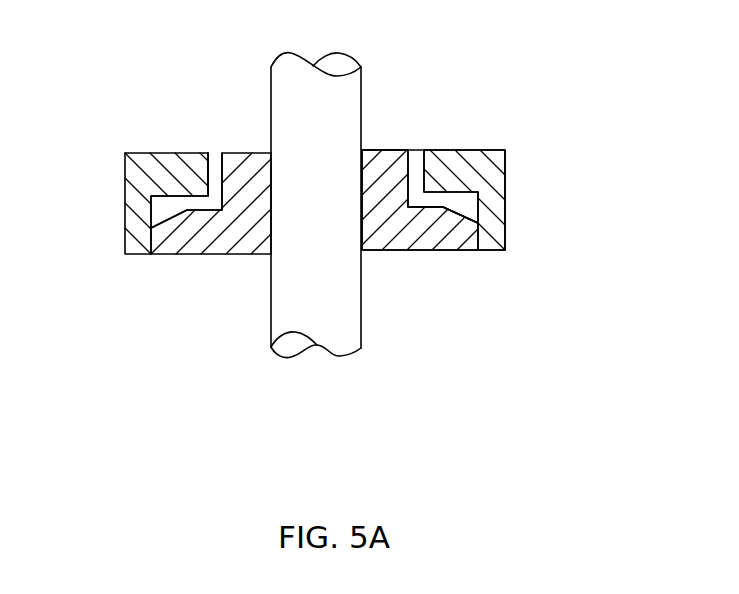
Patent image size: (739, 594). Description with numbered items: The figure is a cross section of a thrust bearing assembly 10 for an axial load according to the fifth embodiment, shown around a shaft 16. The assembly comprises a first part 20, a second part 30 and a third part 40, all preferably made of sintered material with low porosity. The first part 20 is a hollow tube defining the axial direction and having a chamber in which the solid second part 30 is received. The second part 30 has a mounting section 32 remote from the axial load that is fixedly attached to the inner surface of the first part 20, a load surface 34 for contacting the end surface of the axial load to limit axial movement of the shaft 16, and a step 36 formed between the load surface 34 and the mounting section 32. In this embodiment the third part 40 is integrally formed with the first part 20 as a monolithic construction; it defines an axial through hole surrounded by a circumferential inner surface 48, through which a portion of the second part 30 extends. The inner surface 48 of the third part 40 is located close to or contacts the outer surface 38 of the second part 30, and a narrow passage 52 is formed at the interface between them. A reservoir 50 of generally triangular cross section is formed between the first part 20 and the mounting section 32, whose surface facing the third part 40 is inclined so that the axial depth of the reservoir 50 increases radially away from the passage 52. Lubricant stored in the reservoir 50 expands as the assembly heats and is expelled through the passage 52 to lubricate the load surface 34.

The thrust bearing assembly 10 is at (317, 194).
The shaft 16 is at (287, 311).
The first part 20 is at (495, 178).
The second part 30 is at (405, 232).
The mounting section 32 is at (151, 230).
The load surface 34 is at (383, 151).
The step 36 is at (198, 252).
The outer surface 38 is at (208, 185).
The third part 40 is at (463, 157).
The inner surface 48 is at (207, 153).
The reservoir 50 is at (467, 207).
The passage 52 is at (415, 160).